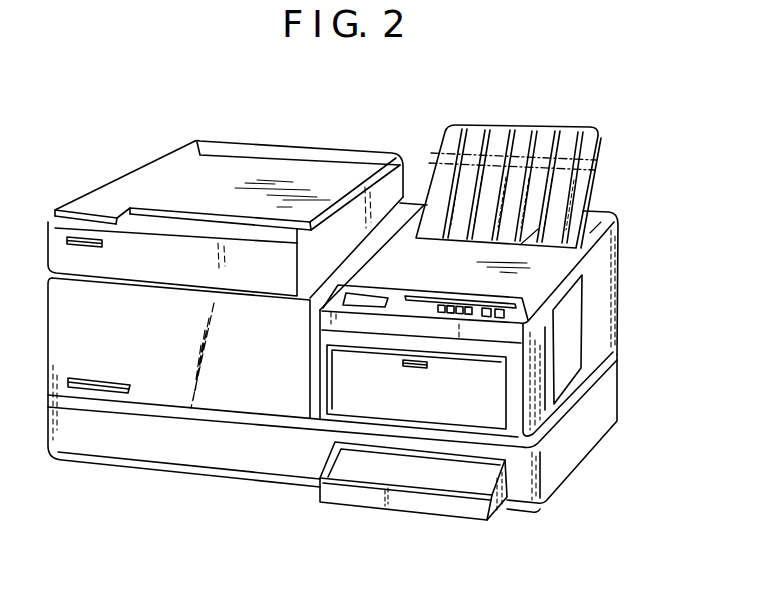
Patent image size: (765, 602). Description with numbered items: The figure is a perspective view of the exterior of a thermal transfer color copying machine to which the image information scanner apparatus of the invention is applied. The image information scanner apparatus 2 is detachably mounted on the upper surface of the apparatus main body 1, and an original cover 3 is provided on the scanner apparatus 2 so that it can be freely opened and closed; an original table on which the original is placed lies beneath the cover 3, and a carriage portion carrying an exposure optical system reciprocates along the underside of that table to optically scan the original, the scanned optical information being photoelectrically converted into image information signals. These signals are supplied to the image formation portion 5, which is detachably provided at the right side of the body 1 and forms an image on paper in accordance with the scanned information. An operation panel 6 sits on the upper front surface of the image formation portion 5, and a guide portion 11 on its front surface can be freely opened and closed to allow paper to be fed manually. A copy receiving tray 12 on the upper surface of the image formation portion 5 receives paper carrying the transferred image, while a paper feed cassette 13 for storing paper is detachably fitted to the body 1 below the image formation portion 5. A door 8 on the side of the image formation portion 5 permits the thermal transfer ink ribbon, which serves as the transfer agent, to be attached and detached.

The apparatus main body 1 is at (156, 448).
The image information scanner apparatus 2 is at (324, 142).
The original cover 3 is at (161, 173).
The image formation portion 5 is at (621, 257).
The operation panel 6 is at (441, 300).
The door 8 is at (568, 368).
The guide portion 11 is at (327, 388).
The copy receiving tray 12 is at (528, 124).
The paper feed cassette 13 is at (410, 507).